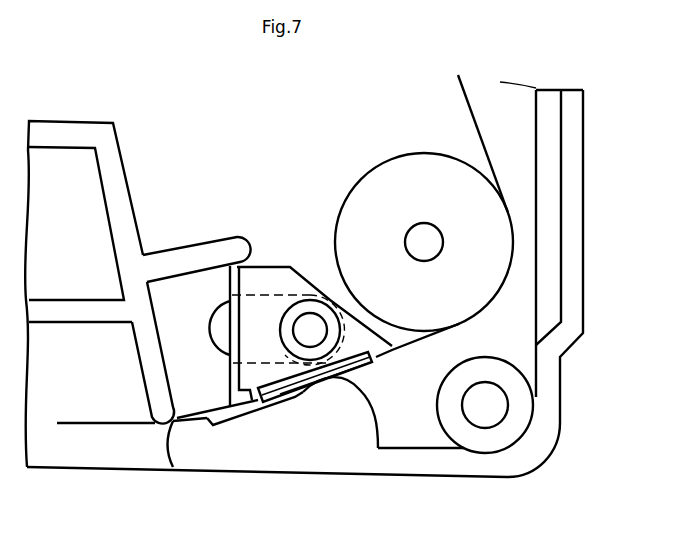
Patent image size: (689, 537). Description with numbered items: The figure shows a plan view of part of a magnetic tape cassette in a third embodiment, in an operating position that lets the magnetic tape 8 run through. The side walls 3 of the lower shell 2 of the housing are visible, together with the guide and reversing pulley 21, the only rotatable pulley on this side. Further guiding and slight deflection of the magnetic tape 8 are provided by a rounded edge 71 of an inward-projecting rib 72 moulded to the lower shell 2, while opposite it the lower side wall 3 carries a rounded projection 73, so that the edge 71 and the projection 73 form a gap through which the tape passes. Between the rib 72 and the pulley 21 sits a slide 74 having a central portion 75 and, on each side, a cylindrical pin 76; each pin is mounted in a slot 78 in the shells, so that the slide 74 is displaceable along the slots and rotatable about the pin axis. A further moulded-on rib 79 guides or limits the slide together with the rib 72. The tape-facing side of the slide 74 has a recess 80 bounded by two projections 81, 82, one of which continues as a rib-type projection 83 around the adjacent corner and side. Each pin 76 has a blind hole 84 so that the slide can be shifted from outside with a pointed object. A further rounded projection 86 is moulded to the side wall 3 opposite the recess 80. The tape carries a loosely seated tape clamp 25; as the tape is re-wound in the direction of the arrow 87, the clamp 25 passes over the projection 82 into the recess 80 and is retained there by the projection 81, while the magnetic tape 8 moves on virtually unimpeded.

The lower shell 2 is at (588, 253).
The side wall 3 is at (573, 170).
The magnetic tape 8 is at (464, 92).
The guide and reversing pulley 21 is at (365, 187).
The tape clamp 25 is at (292, 396).
The rounded edge 71 is at (160, 427).
The inward-projecting rib 72 is at (147, 370).
The rounded projection 73 is at (200, 424).
The slide 74 is at (256, 258).
The central portion 75 is at (280, 283).
The cylindrical pin 76 is at (313, 300).
The slot 78 is at (218, 327).
The moulded-on rib 79 is at (212, 252).
The recess 80 is at (364, 368).
The projection 81 is at (261, 405).
The projection 82 is at (376, 355).
The rib-type projection 83 is at (232, 373).
The blind hole 84 is at (296, 325).
The rounded projection 86 is at (336, 382).
The arrow 87 is at (478, 137).